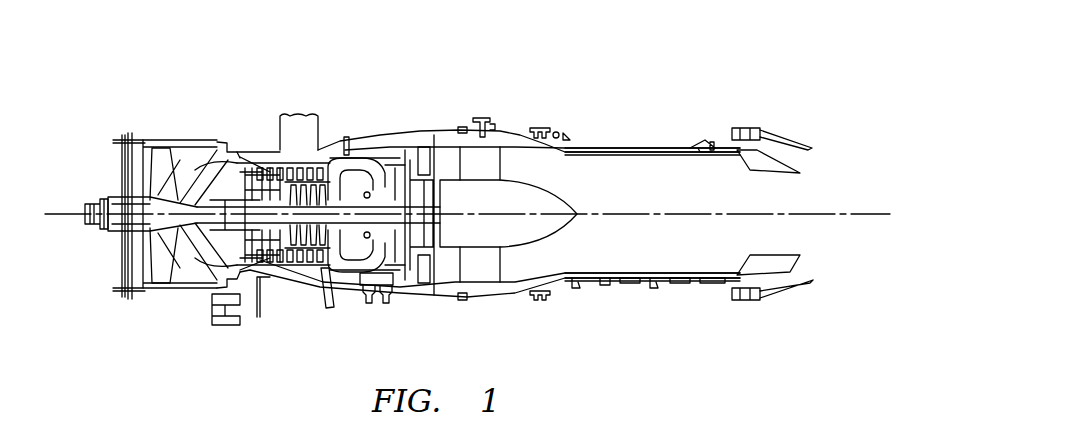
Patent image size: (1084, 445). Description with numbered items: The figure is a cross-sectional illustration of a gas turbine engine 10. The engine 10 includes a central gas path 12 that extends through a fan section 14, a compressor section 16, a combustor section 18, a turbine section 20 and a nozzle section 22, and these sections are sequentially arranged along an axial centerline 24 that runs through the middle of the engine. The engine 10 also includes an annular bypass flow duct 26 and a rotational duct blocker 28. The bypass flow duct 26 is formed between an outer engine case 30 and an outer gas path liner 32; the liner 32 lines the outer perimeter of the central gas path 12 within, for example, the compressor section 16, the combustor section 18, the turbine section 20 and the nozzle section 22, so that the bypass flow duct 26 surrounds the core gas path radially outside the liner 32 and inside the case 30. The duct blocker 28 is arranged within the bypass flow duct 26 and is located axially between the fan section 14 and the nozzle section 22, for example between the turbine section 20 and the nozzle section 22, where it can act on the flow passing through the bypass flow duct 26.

The gas turbine engine 10 is at (175, 92).
The central gas path 12 is at (613, 256).
The fan section 14 is at (200, 128).
The compressor section 16 is at (287, 300).
The combustor section 18 is at (357, 126).
The turbine section 20 is at (410, 126).
The nozzle section 22 is at (766, 120).
The axial centerline 24 is at (65, 216).
The annular bypass flow duct 26 is at (513, 138).
The rotational duct blocker 28 is at (482, 110).
The outer engine case 30 is at (620, 147).
The outer gas path liner 32 is at (619, 156).